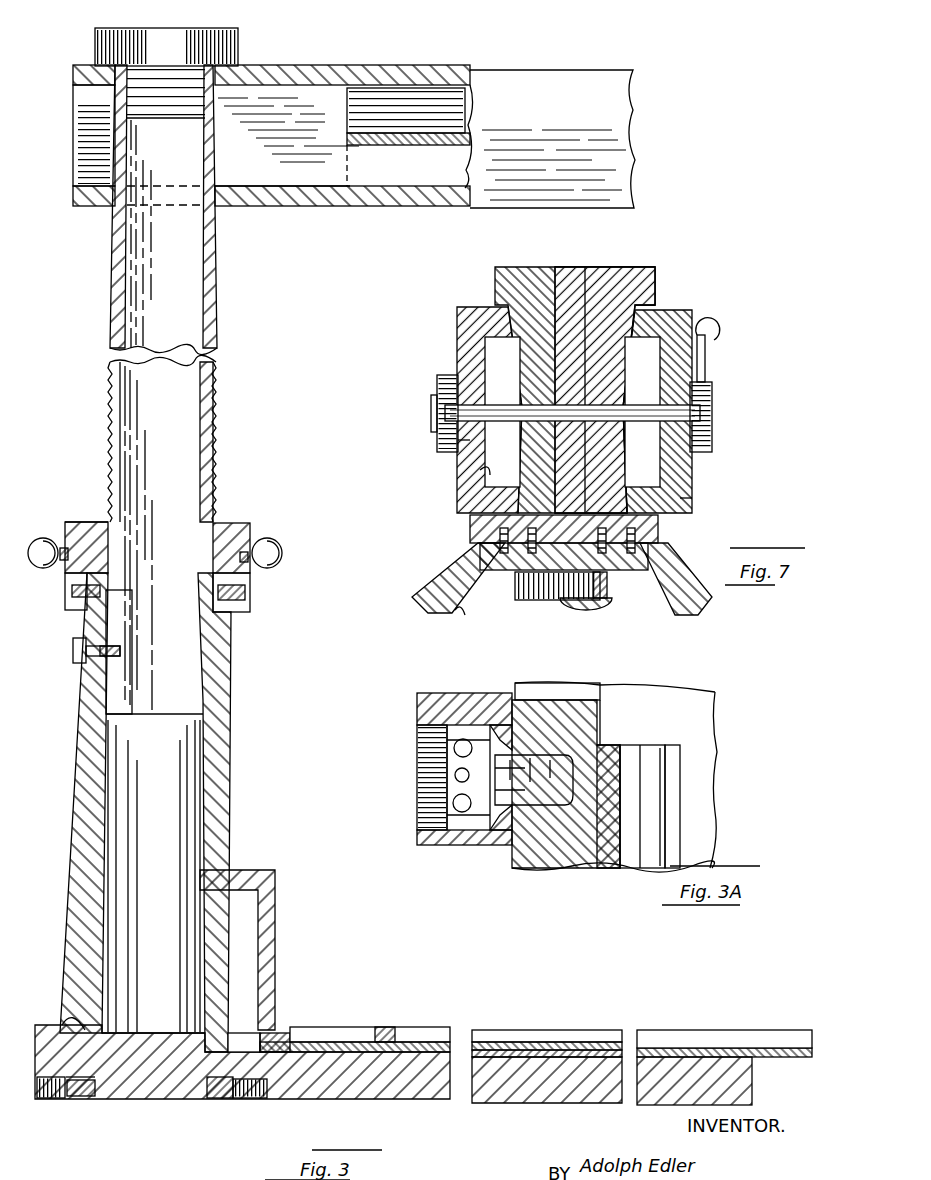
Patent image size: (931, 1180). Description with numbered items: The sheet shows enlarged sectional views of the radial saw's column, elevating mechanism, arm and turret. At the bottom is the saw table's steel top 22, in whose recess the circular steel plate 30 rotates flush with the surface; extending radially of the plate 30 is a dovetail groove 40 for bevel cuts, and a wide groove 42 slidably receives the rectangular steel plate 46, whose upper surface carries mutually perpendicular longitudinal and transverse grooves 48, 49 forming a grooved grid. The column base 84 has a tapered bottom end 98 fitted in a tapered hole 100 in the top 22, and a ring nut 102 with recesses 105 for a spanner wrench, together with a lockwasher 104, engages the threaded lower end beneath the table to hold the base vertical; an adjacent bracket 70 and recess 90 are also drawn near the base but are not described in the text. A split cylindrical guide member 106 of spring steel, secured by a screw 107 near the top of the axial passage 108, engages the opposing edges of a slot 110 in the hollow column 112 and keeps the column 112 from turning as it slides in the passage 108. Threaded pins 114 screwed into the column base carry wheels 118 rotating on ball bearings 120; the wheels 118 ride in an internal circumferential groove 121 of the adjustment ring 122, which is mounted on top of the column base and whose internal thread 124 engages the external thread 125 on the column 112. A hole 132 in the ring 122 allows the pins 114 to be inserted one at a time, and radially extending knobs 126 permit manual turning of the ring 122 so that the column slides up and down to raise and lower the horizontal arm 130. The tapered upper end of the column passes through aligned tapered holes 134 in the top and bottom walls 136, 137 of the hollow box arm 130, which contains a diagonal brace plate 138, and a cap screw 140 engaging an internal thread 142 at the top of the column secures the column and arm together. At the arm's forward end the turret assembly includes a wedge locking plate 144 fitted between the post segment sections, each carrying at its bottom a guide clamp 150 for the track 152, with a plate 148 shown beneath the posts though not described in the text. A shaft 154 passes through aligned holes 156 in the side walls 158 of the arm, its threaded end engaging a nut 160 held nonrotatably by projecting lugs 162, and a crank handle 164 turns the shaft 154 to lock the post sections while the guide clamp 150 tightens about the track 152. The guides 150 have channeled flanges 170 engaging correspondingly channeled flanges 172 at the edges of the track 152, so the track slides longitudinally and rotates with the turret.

In FIG. 3, the steel top 22 is at (548, 1103).
In FIG. 3, the circular steel plate 30 is at (652, 1030).
In FIG. 7, the circular steel plate 30 is at (700, 501).
In FIG. 3, the dovetail groove 40 is at (705, 1032).
In FIG. 3, the wide groove 42 is at (295, 1030).
In FIG. 3, the rectangular steel plate 46 is at (535, 1042).
In FIG. 3, the longitudinal grooves 48 is at (513, 1030).
In FIG. 3, the transverse grooves 49 is at (385, 1027).
In FIG. 3, the bracket 70 is at (277, 899).
In FIG. 3, the column base 84 is at (85, 885).
In FIG. 3, the recess 90 is at (265, 1040).
In FIG. 3, the tapered bottom end 98 is at (62, 1010).
In FIG. 3, the tapered hole 100 is at (35, 1058).
In FIG. 3, the ring nut 102 is at (85, 1098).
In FIG. 3, the lockwasher 104 is at (218, 1092).
In FIG. 3, the recesses 105 is at (72, 1095).
In FIG. 3A, the split cylindrical guide member 106 is at (642, 868).
In FIG. 3, the screw 107 is at (73, 656).
In FIG. 3, the axial passage 108 is at (120, 688).
In FIG. 3, the slot 110 is at (116, 441).
In FIG. 3A, the slot 110 is at (625, 700).
In FIG. 3, the hollow column 112 is at (217, 280).
In FIG. 7, the hollow column 112 is at (535, 598).
In FIG. 3A, the hollow column 112 is at (700, 812).
In FIG. 3, the threaded pins 114 is at (228, 622).
In FIG. 3A, the threaded pins 114 is at (556, 868).
In FIG. 3A, the rotatable wheels 118 is at (495, 832).
In FIG. 3, the ball bearings 120 is at (250, 585).
In FIG. 3A, the ball bearings 120 is at (470, 740).
In FIG. 3A, the internal circumferential groove 121 is at (452, 845).
In FIG. 3, the adjustment nut or ring 122 is at (250, 525).
In FIG. 3A, the adjustment nut or ring 122 is at (425, 712).
In FIG. 3, the internal thread 124 is at (100, 520).
In FIG. 3, the external thread 125 is at (216, 403).
In FIG. 3, the knobs 126 is at (44, 547).
In FIG. 3, the horizontal arm 130 is at (412, 207).
In FIG. 3, the hole 132 is at (66, 593).
In FIG. 3A, the hole 132 is at (425, 776).
In FIG. 3, the tapered holes 134 is at (98, 206).
In FIG. 3, the top wall 136 is at (352, 66).
In FIG. 7, the top wall 136 is at (665, 316).
In FIG. 3, the bottom wall 137 is at (368, 207).
In FIG. 7, the bottom wall 137 is at (480, 471).
In FIG. 3, the brace plate 138 is at (415, 135).
In FIG. 3, the cap screw 140 is at (167, 47).
In FIG. 3, the internal thread 142 is at (125, 110).
In FIG. 7, the wedge locking plate 144 is at (575, 267).
In FIG. 7, the mounting plate 148 is at (660, 540).
In FIG. 7, the guide clamp 150 is at (598, 575).
In FIG. 7, the track 152 is at (570, 600).
In FIG. 7, the shaft 154 is at (638, 405).
In FIG. 7, the aligned holes 156 is at (682, 469).
In FIG. 3, the side wall 158 is at (518, 195).
In FIG. 7, the side wall 158 is at (470, 357).
In FIG. 7, the nut 160 is at (436, 388).
In FIG. 7, the projecting lugs 162 is at (467, 442).
In FIG. 7, the crank handle 164 is at (706, 361).
In FIG. 7, the channeled flanges 170 is at (696, 608).
In FIG. 7, the channeled flanges 172 is at (462, 609).